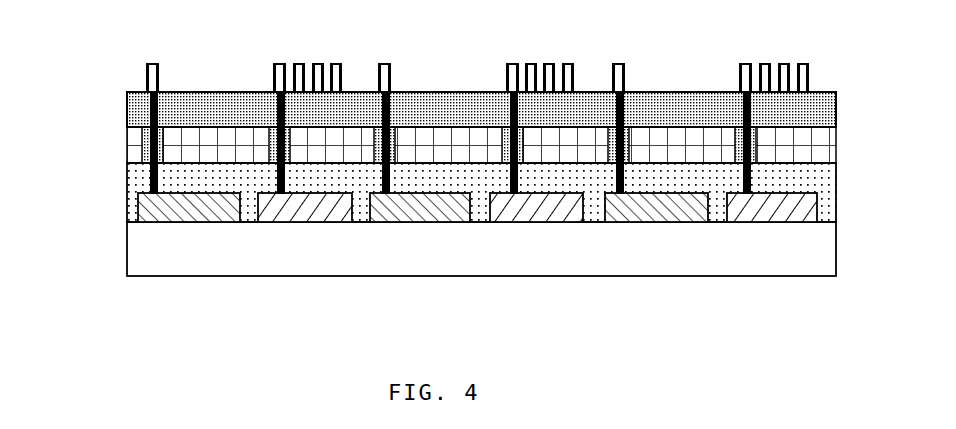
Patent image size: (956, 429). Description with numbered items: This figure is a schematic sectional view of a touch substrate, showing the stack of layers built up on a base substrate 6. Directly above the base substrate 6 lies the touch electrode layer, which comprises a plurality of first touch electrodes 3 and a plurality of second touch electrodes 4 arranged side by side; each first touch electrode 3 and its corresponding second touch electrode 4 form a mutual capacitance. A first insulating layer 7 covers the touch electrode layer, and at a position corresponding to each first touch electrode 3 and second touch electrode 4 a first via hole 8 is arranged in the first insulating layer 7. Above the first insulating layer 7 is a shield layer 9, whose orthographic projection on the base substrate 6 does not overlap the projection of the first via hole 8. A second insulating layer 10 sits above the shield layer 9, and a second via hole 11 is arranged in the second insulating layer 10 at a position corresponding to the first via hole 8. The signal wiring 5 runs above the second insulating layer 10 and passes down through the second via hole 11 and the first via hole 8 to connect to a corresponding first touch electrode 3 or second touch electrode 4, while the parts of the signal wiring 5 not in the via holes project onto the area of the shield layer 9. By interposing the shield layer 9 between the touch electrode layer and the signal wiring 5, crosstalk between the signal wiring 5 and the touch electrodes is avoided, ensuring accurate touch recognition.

The first touch electrode 3 is at (185, 224).
The second touch electrode 4 is at (300, 224).
The signal wiring 5 is at (140, 62).
The base substrate 6 is at (136, 253).
The first insulating layer 7 is at (130, 191).
The first via hole 8 is at (140, 177).
The shield layer 9 is at (133, 144).
The second insulating layer 10 is at (148, 113).
The second via hole 11 is at (140, 106).